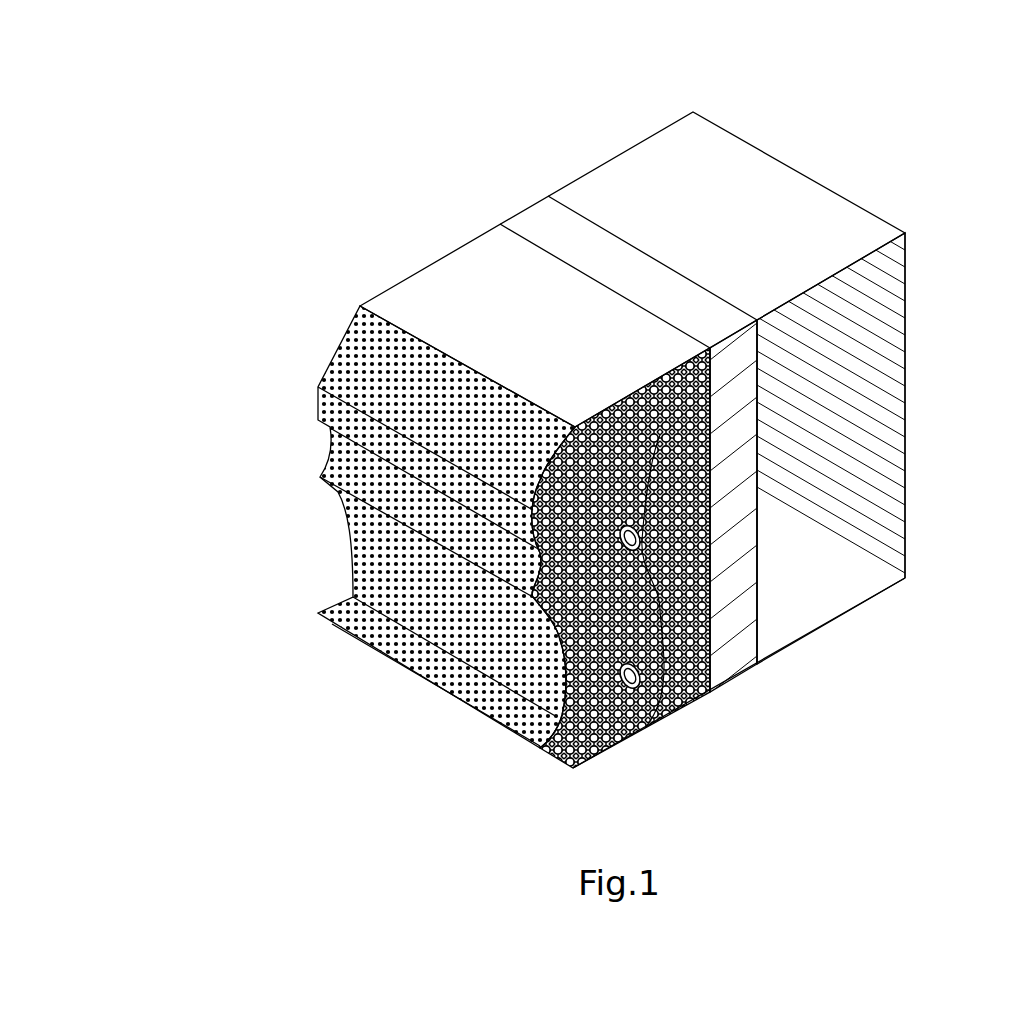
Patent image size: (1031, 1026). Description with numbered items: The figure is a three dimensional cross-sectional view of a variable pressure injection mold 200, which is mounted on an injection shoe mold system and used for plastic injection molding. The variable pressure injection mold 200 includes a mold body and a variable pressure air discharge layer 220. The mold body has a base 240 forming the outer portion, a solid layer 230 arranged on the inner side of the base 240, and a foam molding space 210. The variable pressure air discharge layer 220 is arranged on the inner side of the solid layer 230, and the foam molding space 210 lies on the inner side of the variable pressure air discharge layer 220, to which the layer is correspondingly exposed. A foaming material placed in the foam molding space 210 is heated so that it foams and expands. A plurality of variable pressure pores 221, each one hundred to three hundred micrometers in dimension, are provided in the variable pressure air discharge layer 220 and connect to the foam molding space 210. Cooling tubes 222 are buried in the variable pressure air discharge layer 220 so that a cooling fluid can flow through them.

The variable pressure injection mold 200 is at (1018, 53).
The foam molding space 210 is at (300, 568).
The variable pressure air discharge layer 220 is at (452, 290).
The variable pressure pores 221 is at (338, 345).
The cooling tubes 222 is at (693, 692).
The solid layer 230 is at (550, 234).
The base 240 is at (632, 186).